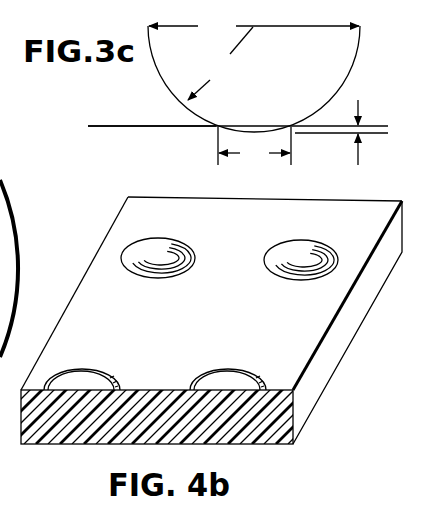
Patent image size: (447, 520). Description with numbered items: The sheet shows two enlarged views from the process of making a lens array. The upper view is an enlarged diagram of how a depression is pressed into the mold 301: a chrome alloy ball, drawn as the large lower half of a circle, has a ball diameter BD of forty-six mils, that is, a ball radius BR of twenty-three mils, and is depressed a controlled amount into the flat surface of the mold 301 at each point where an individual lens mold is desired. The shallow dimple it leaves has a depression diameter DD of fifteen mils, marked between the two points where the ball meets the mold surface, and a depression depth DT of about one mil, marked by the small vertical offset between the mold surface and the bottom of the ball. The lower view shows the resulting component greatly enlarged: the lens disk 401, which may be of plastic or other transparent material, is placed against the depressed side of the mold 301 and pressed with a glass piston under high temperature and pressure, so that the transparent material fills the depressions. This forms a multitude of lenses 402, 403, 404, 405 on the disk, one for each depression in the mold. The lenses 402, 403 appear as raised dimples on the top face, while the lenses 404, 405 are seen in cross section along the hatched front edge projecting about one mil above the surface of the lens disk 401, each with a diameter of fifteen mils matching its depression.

In FIG. 3C, the mold 301 is at (162, 127).
In FIG. 3C, the ball diameter BD is at (254, 27).
In FIG. 3C, the ball radius BR is at (220, 63).
In FIG. 3C, the depression diameter DD is at (254, 146).
In FIG. 3C, the depression depth DT is at (365, 130).
In FIG. 4B, the lens disk 401 is at (127, 219).
In FIG. 4B, the lens 402 is at (165, 250).
In FIG. 4B, the lens 403 is at (307, 251).
In FIG. 4B, the lens 404 is at (98, 373).
In FIG. 4B, the lens 405 is at (227, 373).